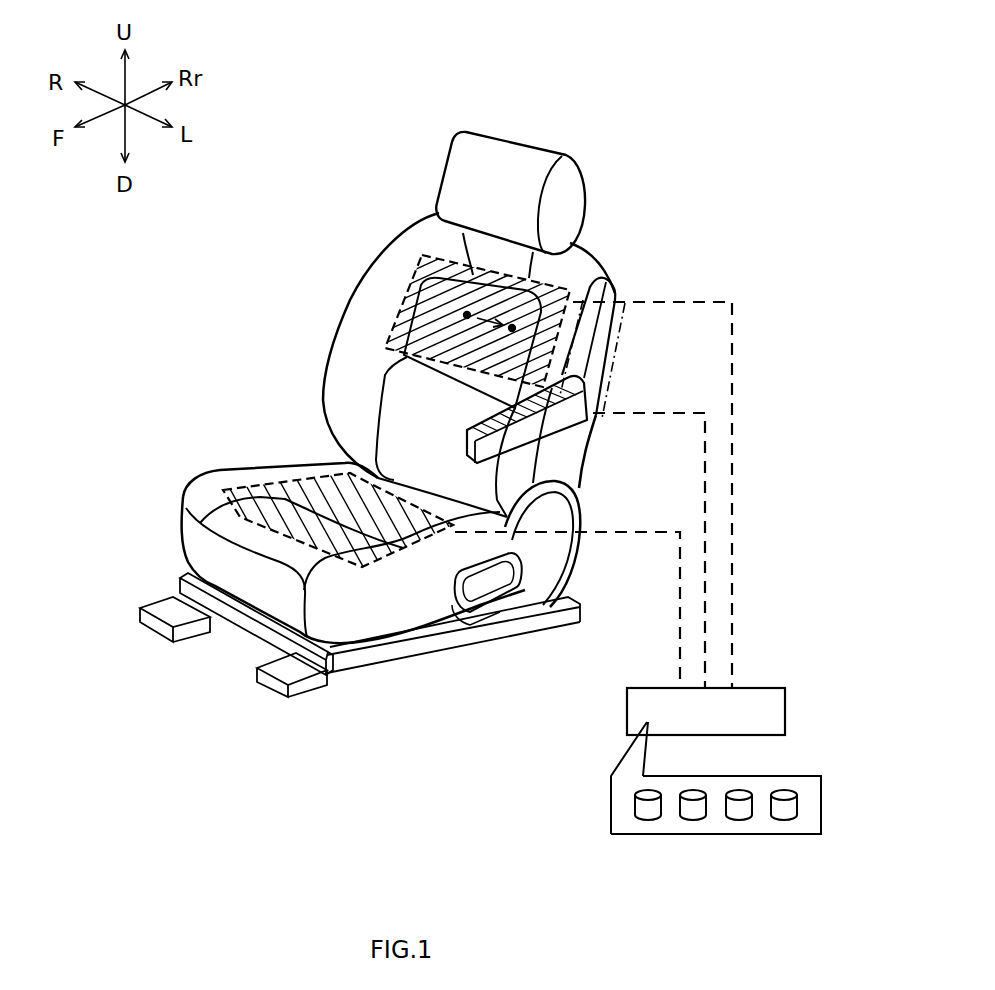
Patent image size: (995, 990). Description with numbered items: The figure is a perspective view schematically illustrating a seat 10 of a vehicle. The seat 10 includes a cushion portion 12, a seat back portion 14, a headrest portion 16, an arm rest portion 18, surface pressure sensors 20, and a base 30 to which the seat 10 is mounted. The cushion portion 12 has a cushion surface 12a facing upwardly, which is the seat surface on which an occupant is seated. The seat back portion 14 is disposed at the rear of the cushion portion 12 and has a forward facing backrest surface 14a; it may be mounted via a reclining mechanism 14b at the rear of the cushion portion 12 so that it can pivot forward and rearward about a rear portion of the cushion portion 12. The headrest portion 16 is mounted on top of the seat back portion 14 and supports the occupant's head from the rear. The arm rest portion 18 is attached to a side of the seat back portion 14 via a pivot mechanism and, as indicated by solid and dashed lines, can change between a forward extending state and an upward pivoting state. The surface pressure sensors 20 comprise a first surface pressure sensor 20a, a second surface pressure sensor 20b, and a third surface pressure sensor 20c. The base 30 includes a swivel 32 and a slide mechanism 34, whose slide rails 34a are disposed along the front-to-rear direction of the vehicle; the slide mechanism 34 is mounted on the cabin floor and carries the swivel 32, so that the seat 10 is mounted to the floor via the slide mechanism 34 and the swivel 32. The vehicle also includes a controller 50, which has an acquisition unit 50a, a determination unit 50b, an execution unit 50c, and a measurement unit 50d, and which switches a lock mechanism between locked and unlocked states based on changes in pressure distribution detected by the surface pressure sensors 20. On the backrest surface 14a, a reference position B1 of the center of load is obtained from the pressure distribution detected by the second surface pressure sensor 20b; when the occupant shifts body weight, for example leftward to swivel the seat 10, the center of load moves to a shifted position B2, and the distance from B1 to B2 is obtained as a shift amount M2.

The seat 10 is at (654, 51).
The cushion portion 12 is at (394, 621).
The cushion surface 12a is at (250, 472).
The seat back portion 14 is at (372, 268).
The backrest surface 14a is at (352, 352).
The reclining mechanism 14b is at (578, 579).
The headrest portion 16 is at (570, 183).
The arm rest portion 18 is at (620, 357).
The surface pressure sensors 20 is at (394, 390).
The first surface pressure sensor 20a is at (220, 490).
The second surface pressure sensor 20b is at (565, 283).
The third surface pressure sensor 20c is at (560, 396).
The base 30 is at (316, 668).
The swivel 32 is at (246, 638).
The slide mechanism 34 is at (303, 708).
The slide rails 34a is at (154, 642).
The controller 50 is at (787, 717).
The acquisition unit 50a is at (645, 815).
The determination unit 50b is at (691, 815).
The execution unit 50c is at (740, 815).
The measurement unit 50d is at (784, 815).
The shift amount M2 is at (492, 310).
The reference position B1 is at (464, 318).
The shifted position B2 is at (511, 331).